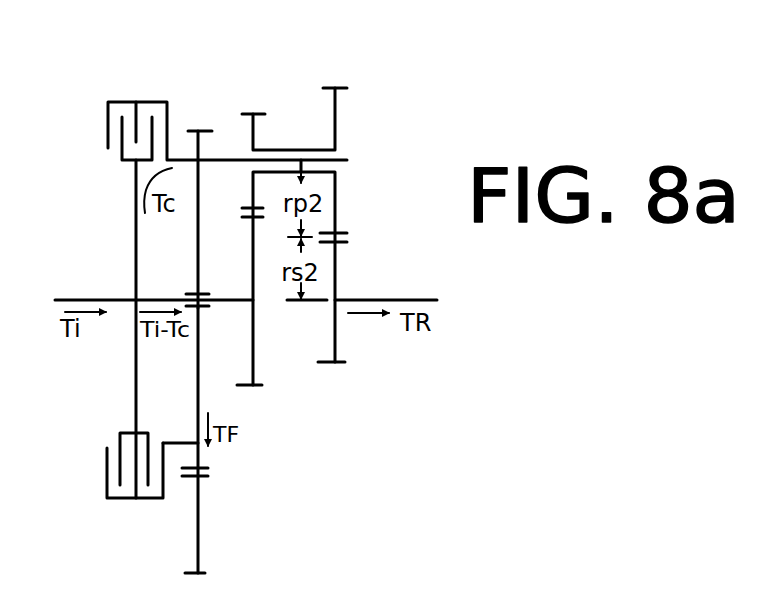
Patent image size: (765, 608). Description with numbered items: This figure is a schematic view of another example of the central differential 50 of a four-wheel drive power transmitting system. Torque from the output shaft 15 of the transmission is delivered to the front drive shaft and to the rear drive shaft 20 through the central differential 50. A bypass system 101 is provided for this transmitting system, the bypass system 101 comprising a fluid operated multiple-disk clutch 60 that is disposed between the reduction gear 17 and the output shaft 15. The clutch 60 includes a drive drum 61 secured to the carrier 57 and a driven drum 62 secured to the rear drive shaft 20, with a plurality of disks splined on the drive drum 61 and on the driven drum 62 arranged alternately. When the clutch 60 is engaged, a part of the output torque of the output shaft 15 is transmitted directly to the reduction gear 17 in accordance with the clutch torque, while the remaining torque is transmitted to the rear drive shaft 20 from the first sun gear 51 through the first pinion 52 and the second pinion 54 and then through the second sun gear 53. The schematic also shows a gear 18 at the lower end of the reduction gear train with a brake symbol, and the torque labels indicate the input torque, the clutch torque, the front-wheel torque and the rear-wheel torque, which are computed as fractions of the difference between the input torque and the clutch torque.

The bypass system 101 is at (96, 203).
The fluid operated multiple-disk clutch 60 is at (150, 99).
The drive drum 61 is at (118, 102).
The driven drum 62 is at (135, 247).
The output shaft 15 is at (72, 300).
The reduction gear 17 is at (200, 131).
The gear with brake 18 is at (199, 548).
The carrier 57 is at (166, 485).
The central differential 50 is at (310, 84).
The first pinion 52 is at (255, 114).
The second pinion 54 is at (336, 110).
The first sun gear 51 is at (260, 387).
The second sun gear 53 is at (337, 365).
The rear drive shaft 20 is at (413, 300).